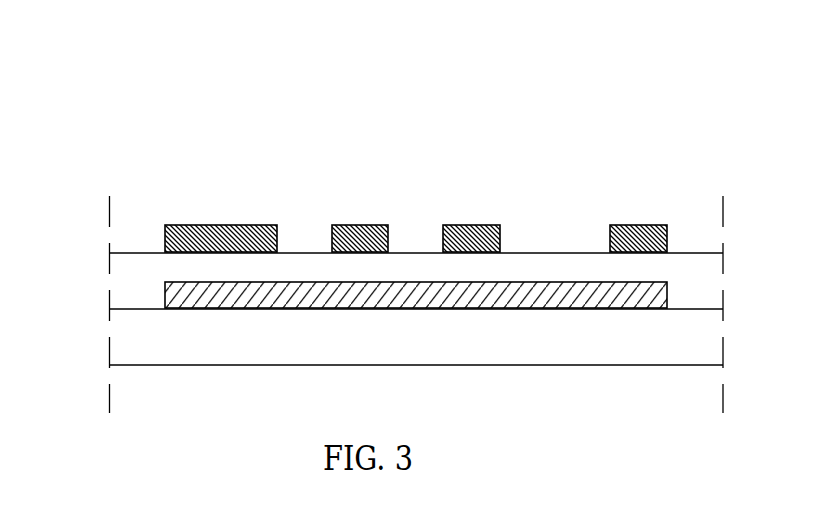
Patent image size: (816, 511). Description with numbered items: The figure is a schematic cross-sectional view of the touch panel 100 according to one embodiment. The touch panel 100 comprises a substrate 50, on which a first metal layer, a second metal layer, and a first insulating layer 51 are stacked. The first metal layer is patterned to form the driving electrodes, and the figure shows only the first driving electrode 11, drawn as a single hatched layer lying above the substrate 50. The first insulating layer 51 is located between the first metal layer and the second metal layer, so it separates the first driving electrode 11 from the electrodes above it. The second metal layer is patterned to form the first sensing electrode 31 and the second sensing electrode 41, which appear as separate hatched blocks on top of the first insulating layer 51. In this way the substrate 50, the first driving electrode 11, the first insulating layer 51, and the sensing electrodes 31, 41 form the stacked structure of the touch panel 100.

The touch panel 100 is at (219, 140).
The first driving electrode 11 is at (530, 293).
The first sensing electrode 31 is at (357, 228).
The second sensing electrode 41 is at (212, 232).
The substrate 50 is at (160, 352).
The first insulating layer 51 is at (150, 285).